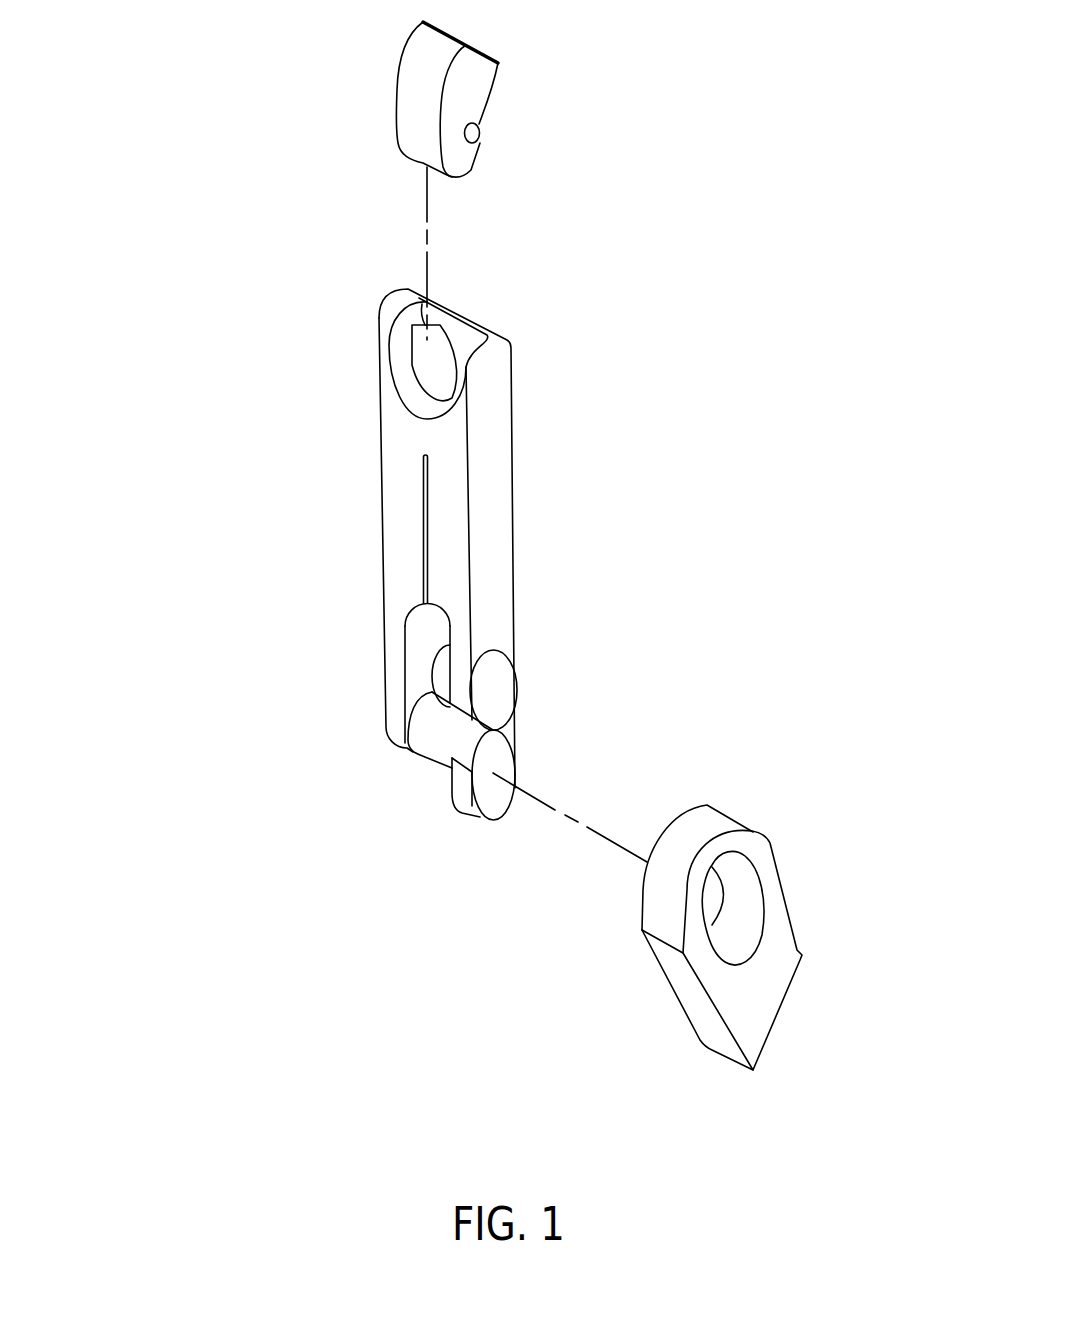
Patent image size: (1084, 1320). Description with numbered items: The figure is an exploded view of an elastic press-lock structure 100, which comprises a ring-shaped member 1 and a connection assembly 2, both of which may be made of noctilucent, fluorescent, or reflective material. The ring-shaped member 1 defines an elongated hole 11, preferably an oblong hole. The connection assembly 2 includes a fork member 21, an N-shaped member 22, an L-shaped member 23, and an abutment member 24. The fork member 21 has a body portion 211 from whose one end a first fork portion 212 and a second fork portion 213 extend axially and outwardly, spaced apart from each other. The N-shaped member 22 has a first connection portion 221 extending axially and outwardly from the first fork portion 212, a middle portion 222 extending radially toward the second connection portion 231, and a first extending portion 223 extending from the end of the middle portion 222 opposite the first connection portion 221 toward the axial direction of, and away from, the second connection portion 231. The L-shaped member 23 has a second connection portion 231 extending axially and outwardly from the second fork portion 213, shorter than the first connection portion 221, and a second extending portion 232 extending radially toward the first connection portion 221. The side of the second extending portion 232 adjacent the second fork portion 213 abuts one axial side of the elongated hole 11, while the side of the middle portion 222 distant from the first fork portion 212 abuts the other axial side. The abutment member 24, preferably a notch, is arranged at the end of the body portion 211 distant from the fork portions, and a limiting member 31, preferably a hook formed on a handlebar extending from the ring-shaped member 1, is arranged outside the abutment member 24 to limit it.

The elastic press-lock structure 100 is at (753, 280).
The ring-shaped member 1 is at (749, 901).
The elongated hole 11 is at (713, 892).
The connection assembly 2 is at (199, 488).
The fork member 21 is at (442, 533).
The body portion 211 is at (435, 449).
The first fork portion 212 is at (402, 499).
The second fork portion 213 is at (435, 533).
The abutment member 24 is at (427, 370).
The N-shaped member 22 is at (391, 750).
The first connection portion 221 is at (385, 635).
The middle portion 222 is at (448, 737).
The first extending portion 223 is at (467, 793).
The L-shaped member 23 is at (532, 690).
The second connection portion 231 is at (460, 660).
The second extending portion 232 is at (444, 682).
The limiting member 31 is at (466, 157).